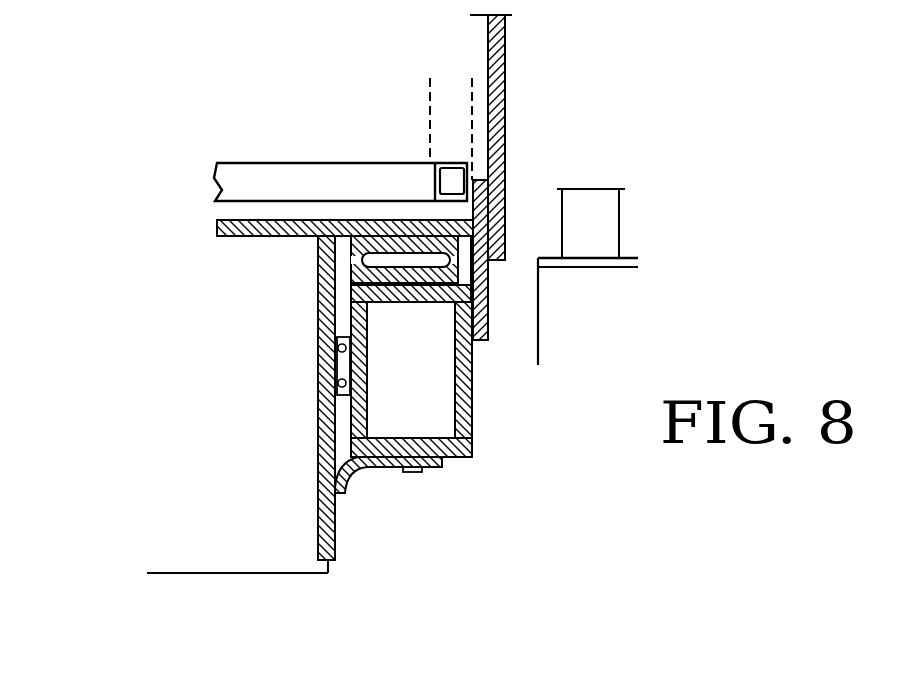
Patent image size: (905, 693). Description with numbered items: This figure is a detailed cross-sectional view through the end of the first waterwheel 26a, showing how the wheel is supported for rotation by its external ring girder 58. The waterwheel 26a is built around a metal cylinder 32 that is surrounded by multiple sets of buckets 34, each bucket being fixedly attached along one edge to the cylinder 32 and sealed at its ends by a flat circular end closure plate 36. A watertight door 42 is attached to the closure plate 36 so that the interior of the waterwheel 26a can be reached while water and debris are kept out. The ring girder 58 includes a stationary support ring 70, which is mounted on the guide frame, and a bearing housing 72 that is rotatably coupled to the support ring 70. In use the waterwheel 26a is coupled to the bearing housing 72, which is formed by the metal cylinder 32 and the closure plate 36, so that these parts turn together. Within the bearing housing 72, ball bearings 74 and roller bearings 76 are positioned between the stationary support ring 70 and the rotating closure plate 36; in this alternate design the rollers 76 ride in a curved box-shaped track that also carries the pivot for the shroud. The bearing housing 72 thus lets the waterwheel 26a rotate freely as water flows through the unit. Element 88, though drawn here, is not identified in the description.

The first waterwheel 26a is at (143, 272).
The metal cylinder 32 is at (282, 241).
The buckets 34 is at (237, 573).
The end closure plate 36 is at (490, 297).
The watertight door 42 is at (505, 86).
The ring girder 58 is at (487, 438).
The stationary support ring 70 is at (473, 392).
The bearing housing 72 is at (318, 512).
The ball bearings 74 is at (320, 368).
The roller bearings 76 is at (351, 285).
The panel 88 is at (345, 161).